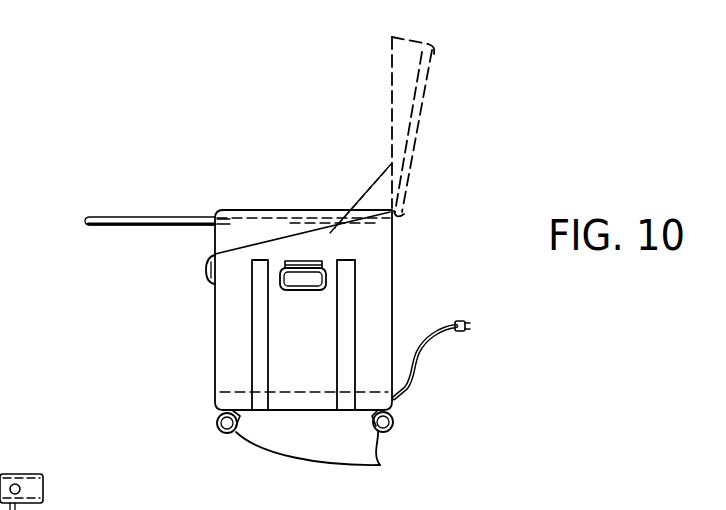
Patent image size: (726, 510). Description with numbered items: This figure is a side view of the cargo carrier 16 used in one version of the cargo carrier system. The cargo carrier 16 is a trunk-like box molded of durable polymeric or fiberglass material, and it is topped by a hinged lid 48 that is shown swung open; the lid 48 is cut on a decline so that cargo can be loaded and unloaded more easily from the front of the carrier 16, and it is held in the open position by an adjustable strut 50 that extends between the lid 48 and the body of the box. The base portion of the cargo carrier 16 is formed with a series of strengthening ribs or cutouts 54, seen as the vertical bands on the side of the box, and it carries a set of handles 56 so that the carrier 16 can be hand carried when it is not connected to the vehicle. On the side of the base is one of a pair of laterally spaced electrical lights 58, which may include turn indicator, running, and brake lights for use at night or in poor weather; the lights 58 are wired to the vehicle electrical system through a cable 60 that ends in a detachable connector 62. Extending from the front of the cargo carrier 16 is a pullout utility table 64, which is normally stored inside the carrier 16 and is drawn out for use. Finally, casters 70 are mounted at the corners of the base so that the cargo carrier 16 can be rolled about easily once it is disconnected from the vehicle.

The cargo carrier 16 is at (415, 293).
The hinged lid 48 is at (422, 127).
The adjustable strut 50 is at (362, 195).
The strengthening ribs or cutouts 54 is at (255, 350).
The handles 56 is at (328, 278).
The electrical lights 58 is at (207, 275).
The cable 60 is at (418, 374).
The detachable connector 62 is at (463, 320).
The pullout utility table 64 is at (133, 217).
The casters 70 is at (382, 464).